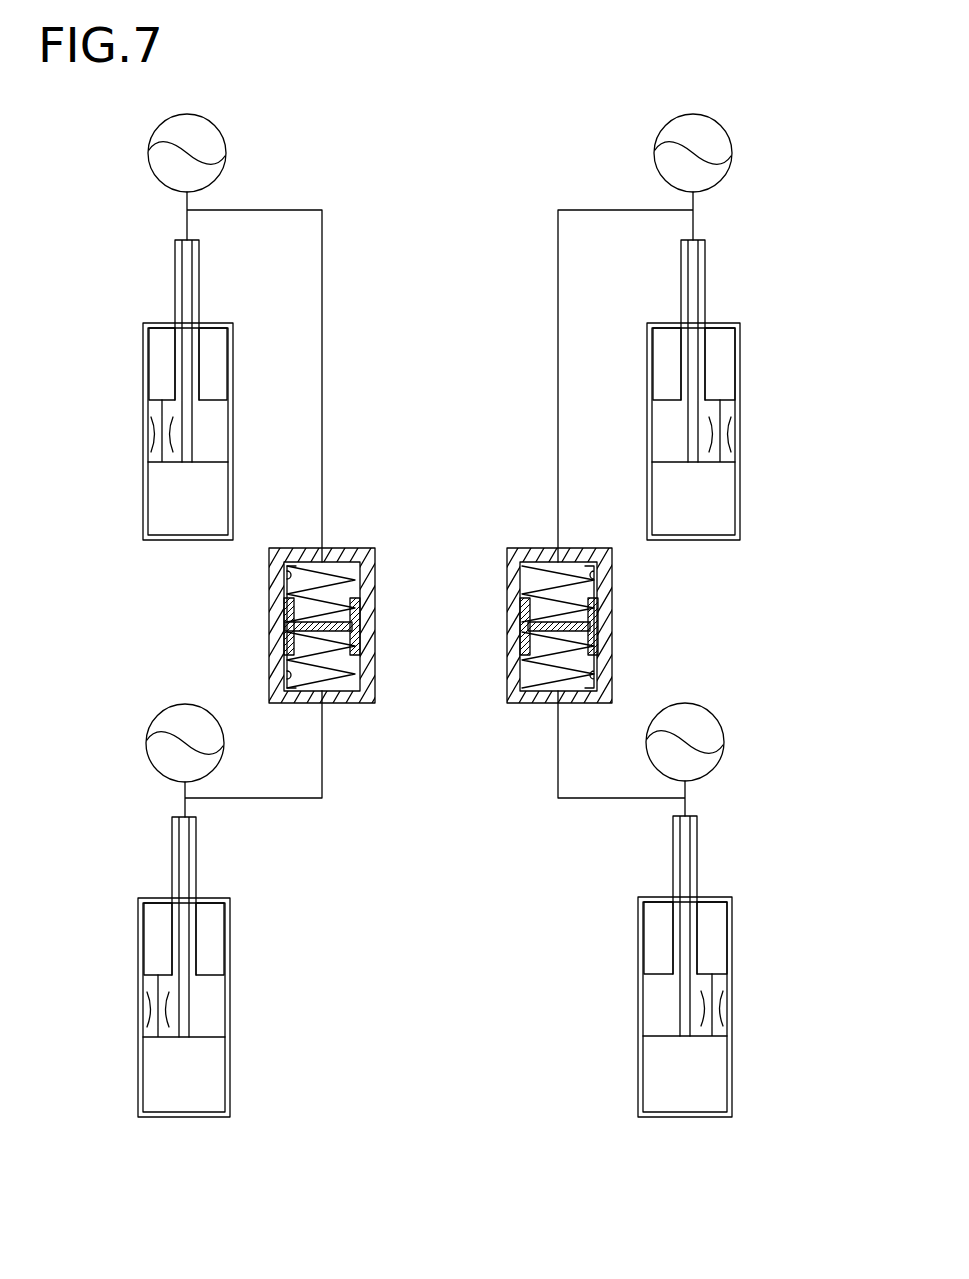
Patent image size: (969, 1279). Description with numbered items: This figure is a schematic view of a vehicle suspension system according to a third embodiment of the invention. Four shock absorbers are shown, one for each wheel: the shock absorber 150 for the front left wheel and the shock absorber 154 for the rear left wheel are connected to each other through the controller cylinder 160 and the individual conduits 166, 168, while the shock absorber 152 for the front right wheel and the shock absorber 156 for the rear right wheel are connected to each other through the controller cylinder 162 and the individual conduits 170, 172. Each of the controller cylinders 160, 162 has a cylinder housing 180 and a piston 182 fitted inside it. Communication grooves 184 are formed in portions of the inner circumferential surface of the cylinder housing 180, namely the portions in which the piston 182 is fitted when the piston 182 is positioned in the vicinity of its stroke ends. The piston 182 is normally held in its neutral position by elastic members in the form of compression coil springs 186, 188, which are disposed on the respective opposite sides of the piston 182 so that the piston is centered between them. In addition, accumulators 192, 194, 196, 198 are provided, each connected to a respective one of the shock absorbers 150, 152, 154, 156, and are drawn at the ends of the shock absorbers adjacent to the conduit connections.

The shock absorber 150 is at (130, 356).
The shock absorber 152 is at (757, 357).
The shock absorber 154 is at (127, 920).
The shock absorber 156 is at (747, 921).
The controller cylinder 160 is at (220, 607).
The controller cylinder 162 is at (652, 607).
The conduit 166 is at (263, 210).
The conduit 168 is at (322, 770).
The conduit 170 is at (605, 210).
The conduit 172 is at (556, 770).
The cylinder housing 180 is at (372, 608).
The piston 182 is at (285, 625).
The communication grooves 184 is at (283, 674).
The compression coil spring 186 is at (301, 618).
The compression coil spring 188 is at (314, 680).
The accumulator 192 is at (152, 148).
The accumulator 194 is at (718, 143).
The accumulator 196 is at (150, 740).
The accumulator 198 is at (715, 735).